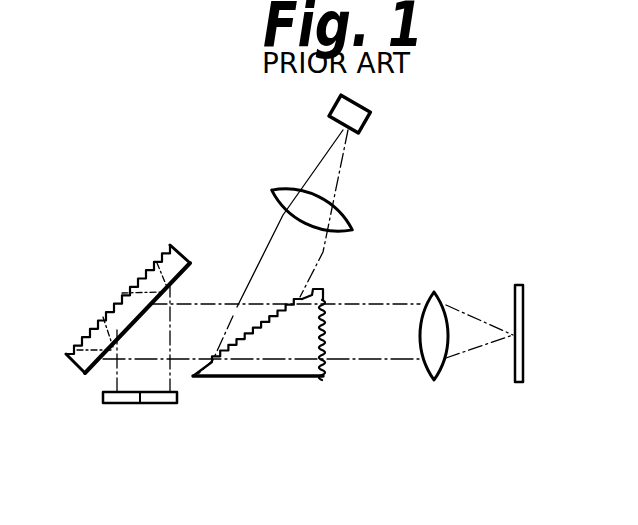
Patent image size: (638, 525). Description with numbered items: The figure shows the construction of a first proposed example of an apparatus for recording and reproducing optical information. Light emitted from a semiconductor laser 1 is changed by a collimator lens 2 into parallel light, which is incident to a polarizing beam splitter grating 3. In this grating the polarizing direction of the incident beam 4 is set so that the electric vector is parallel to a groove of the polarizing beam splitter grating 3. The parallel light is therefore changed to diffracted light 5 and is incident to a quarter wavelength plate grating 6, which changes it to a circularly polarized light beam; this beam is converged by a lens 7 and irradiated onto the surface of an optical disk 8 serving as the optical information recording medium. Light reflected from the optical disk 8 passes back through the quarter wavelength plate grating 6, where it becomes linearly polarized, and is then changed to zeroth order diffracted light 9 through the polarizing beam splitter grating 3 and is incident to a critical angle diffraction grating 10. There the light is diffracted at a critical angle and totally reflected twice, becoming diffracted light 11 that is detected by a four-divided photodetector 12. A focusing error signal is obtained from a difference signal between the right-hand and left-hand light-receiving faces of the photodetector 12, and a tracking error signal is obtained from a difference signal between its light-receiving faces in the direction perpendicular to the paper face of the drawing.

The semiconductor laser 1 is at (372, 117).
The collimator lens 2 is at (285, 188).
The polarizing beam splitter grating 3 is at (274, 335).
The incident beam 4 is at (272, 233).
The diffracted light 5 is at (388, 302).
The ¼ wavelength plate grating 6 is at (325, 325).
The lens 7 is at (434, 292).
The optical disk 8 is at (523, 303).
The zeroth order diffracted light 9 is at (186, 362).
The critical angle diffraction grating 10 is at (175, 246).
The diffracted light 11 is at (117, 384).
The four-divided photodetector 12 is at (127, 403).